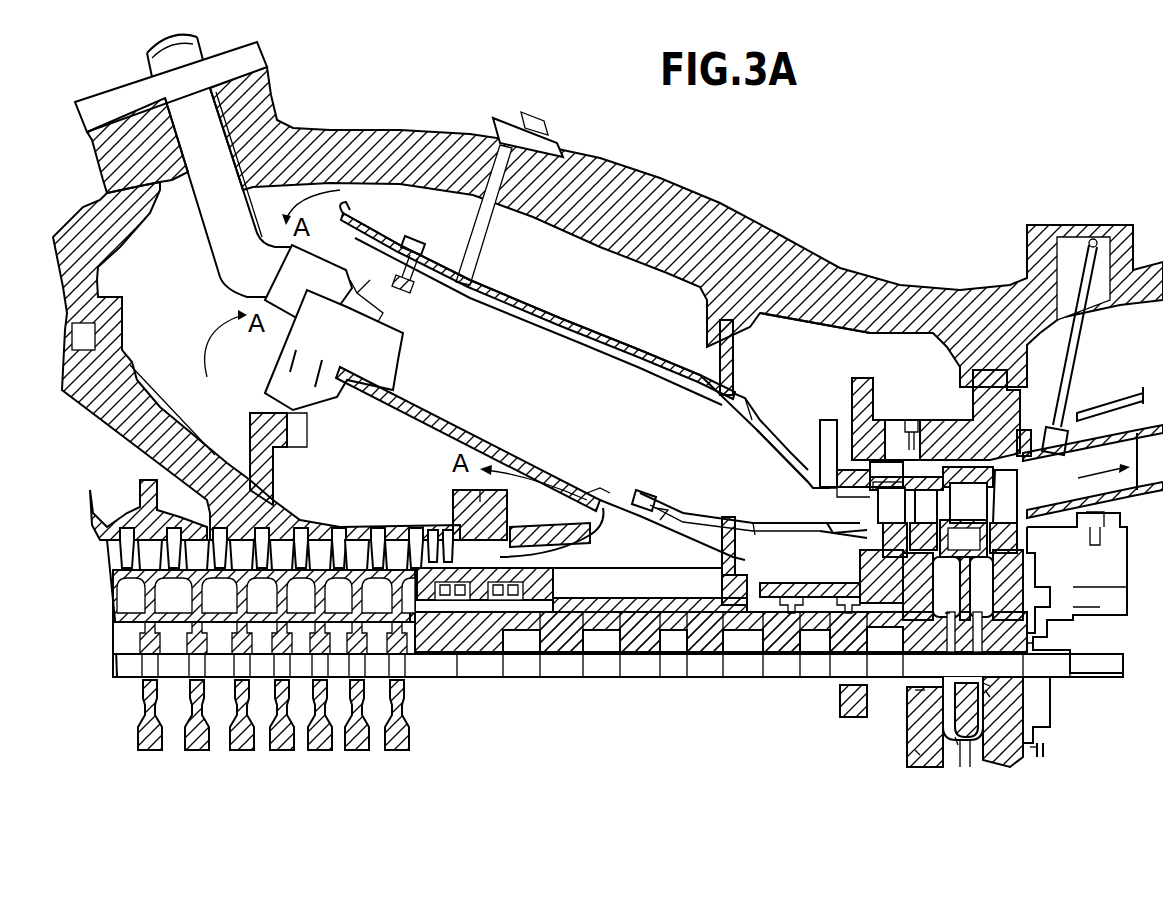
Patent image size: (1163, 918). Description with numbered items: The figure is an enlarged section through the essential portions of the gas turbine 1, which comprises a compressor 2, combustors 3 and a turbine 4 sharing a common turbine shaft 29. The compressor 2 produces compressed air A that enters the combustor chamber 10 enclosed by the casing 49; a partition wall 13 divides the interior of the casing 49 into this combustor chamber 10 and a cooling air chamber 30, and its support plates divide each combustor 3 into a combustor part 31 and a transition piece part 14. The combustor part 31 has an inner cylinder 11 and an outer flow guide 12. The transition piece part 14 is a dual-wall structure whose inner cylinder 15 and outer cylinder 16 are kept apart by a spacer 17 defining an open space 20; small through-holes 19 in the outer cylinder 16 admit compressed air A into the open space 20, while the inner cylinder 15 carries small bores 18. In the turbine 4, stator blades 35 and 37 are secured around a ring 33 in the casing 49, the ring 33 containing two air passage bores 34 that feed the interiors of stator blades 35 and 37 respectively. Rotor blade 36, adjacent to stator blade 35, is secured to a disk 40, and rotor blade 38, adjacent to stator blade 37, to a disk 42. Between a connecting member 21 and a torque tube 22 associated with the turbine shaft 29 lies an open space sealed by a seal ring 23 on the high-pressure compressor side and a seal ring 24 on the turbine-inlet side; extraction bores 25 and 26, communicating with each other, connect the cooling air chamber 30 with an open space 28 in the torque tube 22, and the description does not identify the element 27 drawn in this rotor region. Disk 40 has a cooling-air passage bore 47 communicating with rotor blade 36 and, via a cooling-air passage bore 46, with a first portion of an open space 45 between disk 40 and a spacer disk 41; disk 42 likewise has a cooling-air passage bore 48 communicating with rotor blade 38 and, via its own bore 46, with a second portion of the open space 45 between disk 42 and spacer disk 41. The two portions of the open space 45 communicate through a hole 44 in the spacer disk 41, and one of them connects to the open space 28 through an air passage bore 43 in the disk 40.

The gas turbine 1 is at (326, 116).
The compressor 2 is at (401, 760).
The combustor 3 is at (374, 210).
The turbine 4 is at (966, 770).
The combustor chamber 10 is at (608, 258).
The inner cylinder 11 is at (640, 258).
The outer flow guide 12 is at (712, 272).
The partition wall 13 is at (746, 388).
The transition piece part 14 is at (762, 374).
The inner cylinder 15 is at (757, 443).
The outer cylinder 16 is at (783, 462).
The spacer 17 is at (760, 432).
The small bores 18 is at (790, 520).
The small through-holes 19 is at (752, 420).
The open space 20 is at (803, 526).
The connecting member 21 is at (623, 640).
The torque tube 22 is at (632, 642).
The seal ring 23 is at (515, 678).
The seal ring 24 is at (793, 614).
The extraction bore 25 is at (712, 630).
The extraction bore 26 is at (748, 640).
The rotor hub section 27 is at (675, 628).
The open space 28 is at (755, 690).
The turbine shaft 29 is at (620, 607).
The cooling air chamber 30 is at (843, 345).
The combustor part 31 is at (560, 268).
The ring 33 is at (960, 433).
The air passage bores 34 is at (915, 428).
The stator blade 35 is at (901, 515).
The rotor blade 36 is at (936, 516).
The stator blade 37 is at (977, 514).
The rotor blade 38 is at (1014, 514).
The disk 40 is at (917, 747).
The spacer disk 41 is at (955, 737).
The disk 42 is at (1030, 747).
The air passage bore 43 is at (920, 690).
The hole 44 is at (983, 683).
The open space 45 is at (987, 690).
The cooling-air passage bore 46 is at (950, 613).
The cooling-air passage bore 47 is at (941, 570).
The cooling-air passage bore 48 is at (983, 587).
The turbine casing 49 is at (445, 130).